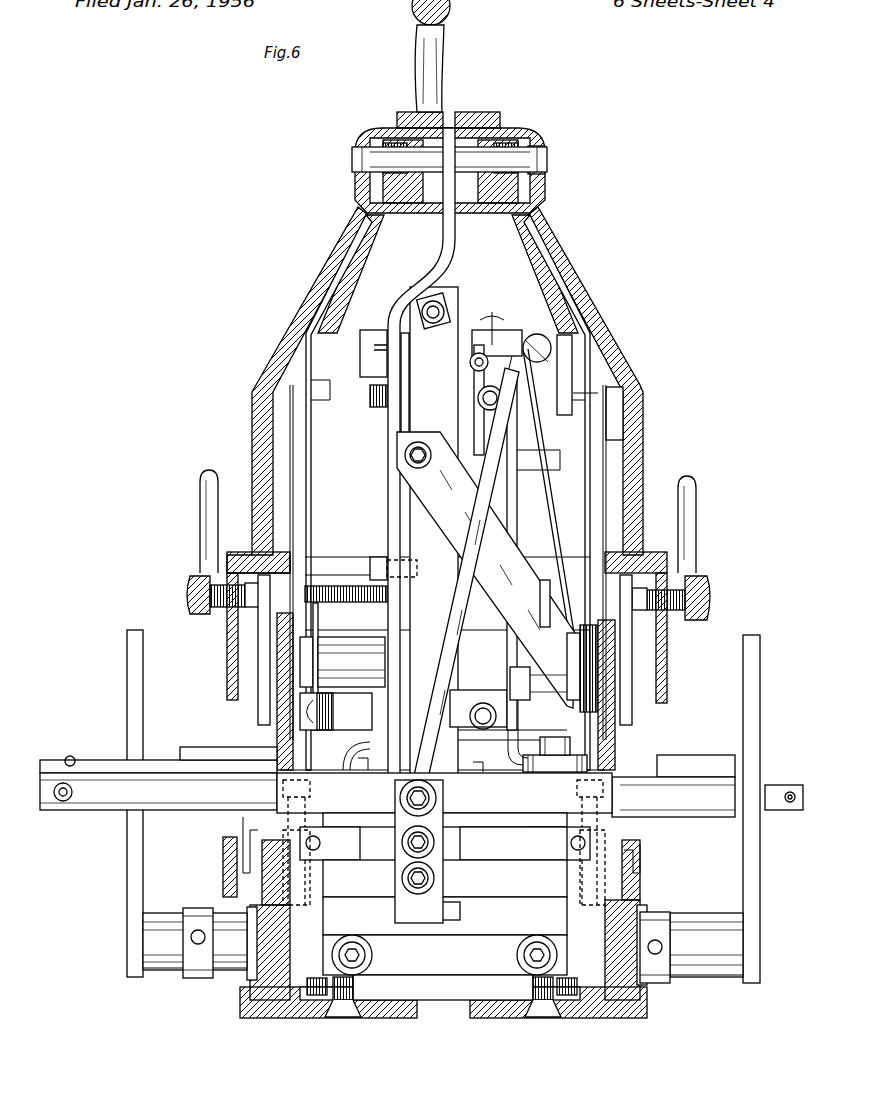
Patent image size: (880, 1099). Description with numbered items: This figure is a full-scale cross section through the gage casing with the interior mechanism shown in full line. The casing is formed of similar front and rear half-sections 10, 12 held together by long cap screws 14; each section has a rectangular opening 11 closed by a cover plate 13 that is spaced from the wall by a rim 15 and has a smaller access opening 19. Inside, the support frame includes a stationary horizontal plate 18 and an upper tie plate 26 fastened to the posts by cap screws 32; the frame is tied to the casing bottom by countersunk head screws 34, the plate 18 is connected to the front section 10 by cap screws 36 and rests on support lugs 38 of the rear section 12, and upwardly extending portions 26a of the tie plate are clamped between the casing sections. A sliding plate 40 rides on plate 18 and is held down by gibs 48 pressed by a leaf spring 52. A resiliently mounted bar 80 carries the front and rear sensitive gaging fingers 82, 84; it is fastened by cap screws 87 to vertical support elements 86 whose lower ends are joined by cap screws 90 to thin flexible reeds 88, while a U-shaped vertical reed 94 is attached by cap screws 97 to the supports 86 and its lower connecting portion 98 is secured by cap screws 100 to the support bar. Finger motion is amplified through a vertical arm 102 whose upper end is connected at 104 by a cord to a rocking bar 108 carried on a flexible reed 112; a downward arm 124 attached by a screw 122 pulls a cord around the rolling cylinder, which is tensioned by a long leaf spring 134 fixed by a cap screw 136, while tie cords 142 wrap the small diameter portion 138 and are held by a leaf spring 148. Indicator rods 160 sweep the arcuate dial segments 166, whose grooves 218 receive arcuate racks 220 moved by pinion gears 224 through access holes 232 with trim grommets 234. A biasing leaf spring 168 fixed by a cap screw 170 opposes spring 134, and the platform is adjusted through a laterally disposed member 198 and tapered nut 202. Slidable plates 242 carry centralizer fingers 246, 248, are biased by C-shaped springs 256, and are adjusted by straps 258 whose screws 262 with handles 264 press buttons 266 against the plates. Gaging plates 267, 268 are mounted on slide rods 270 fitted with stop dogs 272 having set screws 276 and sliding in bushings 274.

The front casing half-section 10 is at (644, 405).
The rectangular openings 11 is at (268, 560).
The rear casing half-section 12 is at (252, 388).
The cover plates 13 is at (227, 685).
The long cap screws 14 is at (385, 585).
The rim 15 is at (648, 560).
The stationary horizontal plate member 18 is at (504, 898).
The access openings 19 is at (655, 855).
The upper tie plate member 26 is at (400, 478).
The upwardly extending portions of tie plate 26a is at (447, 262).
The cap screws 32 is at (372, 560).
The countersunk head screws 34 is at (338, 1017).
The cap screws 36 is at (605, 895).
The support lugs 38 is at (283, 908).
The horizontal sliding plate 40 is at (505, 858).
The gibs 48 is at (470, 826).
The leaf spring 52 is at (460, 905).
The resiliently mounted horizontal bar 80 is at (522, 818).
The sensitive gaging finger 82 is at (775, 800).
The sensitive gaging finger 84 is at (80, 795).
The vertical support elements 86 is at (315, 884).
The cap screws 87 is at (310, 802).
The flexible reeds 88 is at (315, 976).
The cap screws 90 is at (303, 1005).
The vertical flexible reed 94 is at (418, 978).
The cap screws 97 is at (320, 844).
The lower horizontal connecting portion 98 is at (468, 978).
The cap screws 100 is at (372, 955).
The vertical arm 102 is at (515, 498).
The cord connection point 104 is at (512, 328).
The rocking-bar 108 is at (386, 320).
The flexible reed 112 is at (472, 370).
The screw 122 is at (545, 345).
The downwardly extending arm 124 is at (548, 475).
The long leaf spring 134 is at (452, 530).
The cap screw 136 is at (405, 456).
The small diameter portion of cylinder 138 is at (360, 645).
The flexible tie cords 142 is at (312, 640).
The leaf spring 148 is at (372, 692).
The indicator rods 160 is at (309, 492).
The arcuate dial segments 166 is at (372, 248).
The biasing leaf spring 168 is at (452, 621).
The cap screw 170 is at (436, 795).
The laterally disposed member 198 is at (415, 405).
The tapered nut 202 is at (431, 324).
The arcuate grooves 218 is at (392, 130).
The arcuate racks 220 is at (383, 185).
The pinion gears 224 is at (415, 112).
The access holes 232 is at (537, 146).
The trim grommets 234 is at (547, 158).
The plate members 242 is at (240, 752).
The centralizer finger 246 is at (770, 785).
The centralizer finger 248 is at (118, 740).
The C-shaped springs 256 is at (244, 850).
The flexible strap members 258 is at (258, 652).
The screws 262 is at (190, 595).
The exterior handles 264 is at (200, 500).
The buttons 266 is at (250, 618).
The gaging plate 267 is at (760, 665).
The gaging plate 268 is at (127, 660).
The slide rods 270 is at (165, 965).
The adjustable stop dogs 272 is at (190, 978).
The bushings 274 is at (246, 975).
The set screws 276 is at (200, 930).